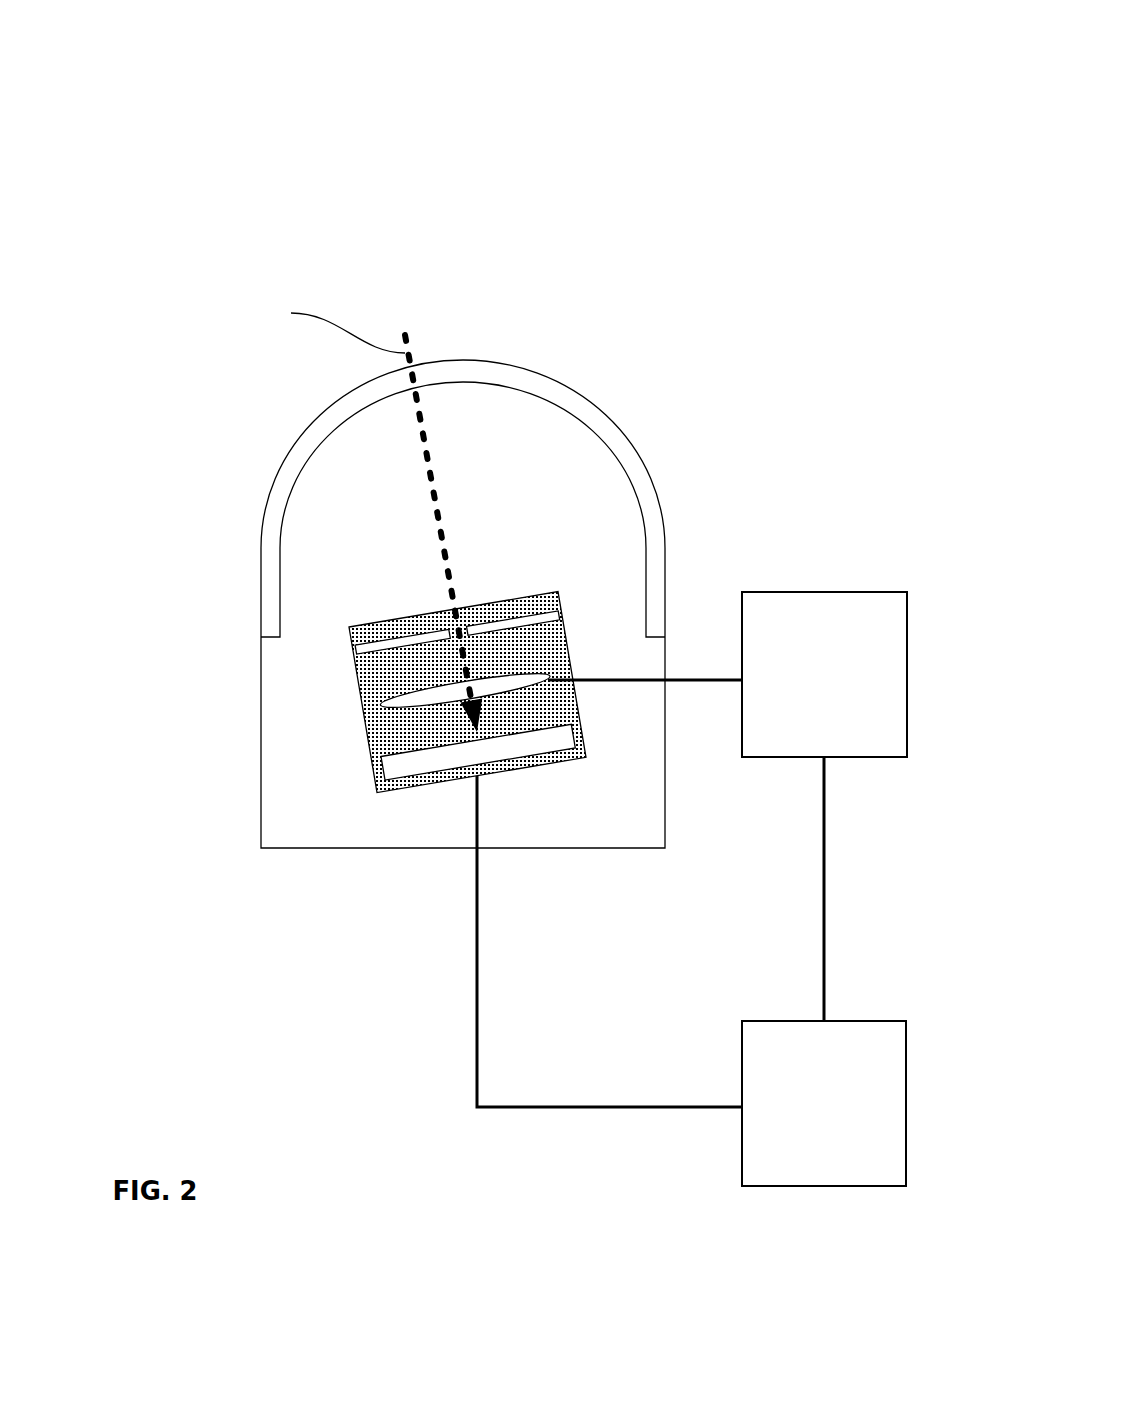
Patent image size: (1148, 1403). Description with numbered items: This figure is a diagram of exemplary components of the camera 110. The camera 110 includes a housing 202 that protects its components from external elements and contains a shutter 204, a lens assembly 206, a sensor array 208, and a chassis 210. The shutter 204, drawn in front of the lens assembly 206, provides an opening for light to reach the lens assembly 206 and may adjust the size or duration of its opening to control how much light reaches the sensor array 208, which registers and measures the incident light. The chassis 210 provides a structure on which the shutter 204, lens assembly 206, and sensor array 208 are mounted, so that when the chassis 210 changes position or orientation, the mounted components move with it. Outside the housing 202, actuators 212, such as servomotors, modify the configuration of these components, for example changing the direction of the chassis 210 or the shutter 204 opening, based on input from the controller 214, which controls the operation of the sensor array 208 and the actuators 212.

The camera 110 is at (338, 116).
The housing 202 is at (231, 350).
The shutter 204 is at (500, 620).
The lens assembly 206 is at (532, 673).
The sensor array 208 is at (560, 738).
The chassis 210 is at (508, 772).
The actuators 212 is at (824, 674).
The controller 214 is at (824, 1103).